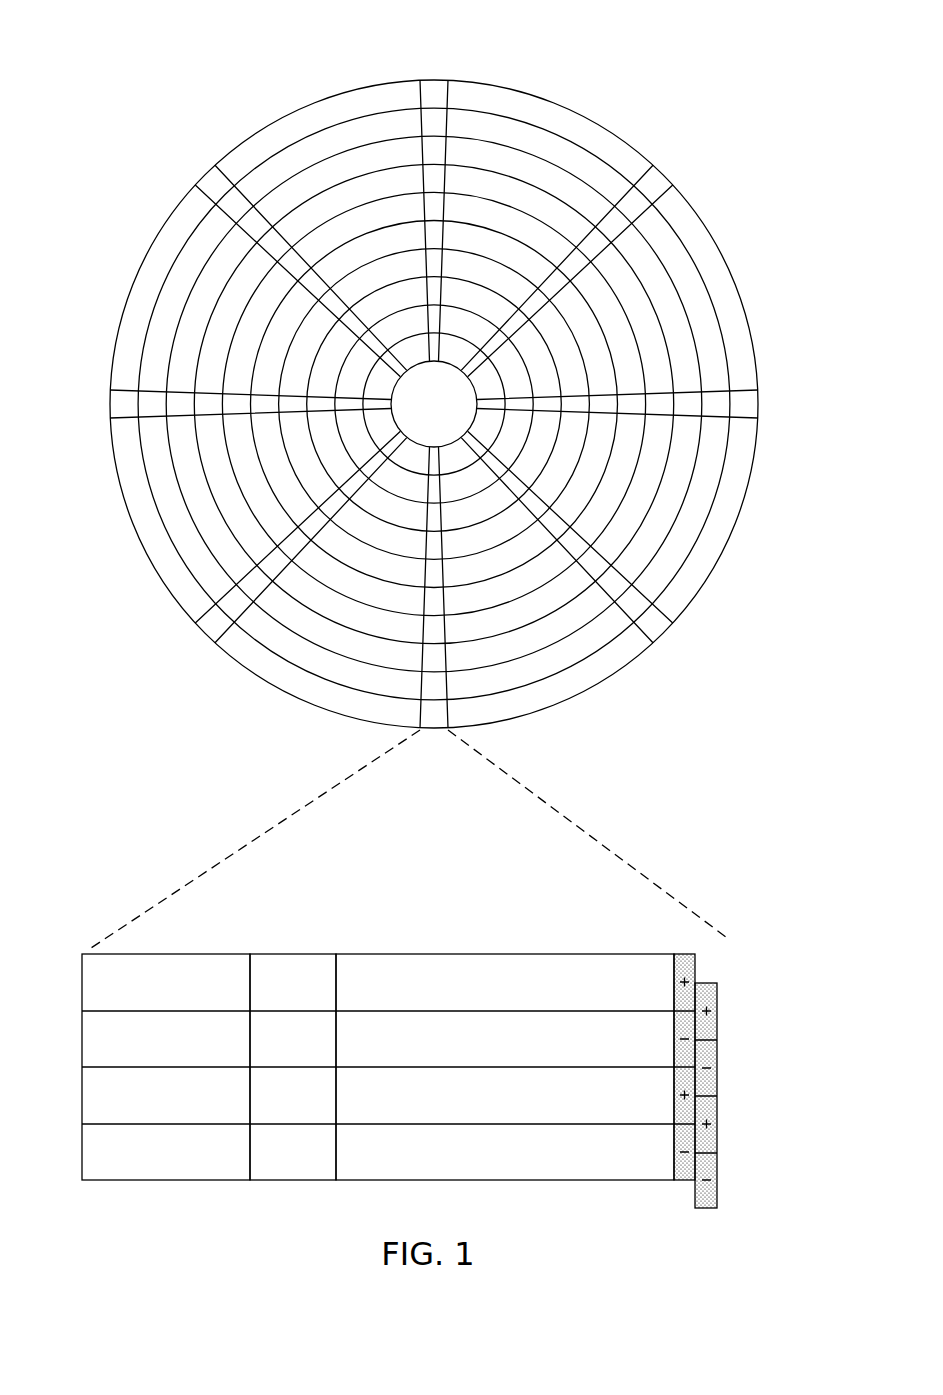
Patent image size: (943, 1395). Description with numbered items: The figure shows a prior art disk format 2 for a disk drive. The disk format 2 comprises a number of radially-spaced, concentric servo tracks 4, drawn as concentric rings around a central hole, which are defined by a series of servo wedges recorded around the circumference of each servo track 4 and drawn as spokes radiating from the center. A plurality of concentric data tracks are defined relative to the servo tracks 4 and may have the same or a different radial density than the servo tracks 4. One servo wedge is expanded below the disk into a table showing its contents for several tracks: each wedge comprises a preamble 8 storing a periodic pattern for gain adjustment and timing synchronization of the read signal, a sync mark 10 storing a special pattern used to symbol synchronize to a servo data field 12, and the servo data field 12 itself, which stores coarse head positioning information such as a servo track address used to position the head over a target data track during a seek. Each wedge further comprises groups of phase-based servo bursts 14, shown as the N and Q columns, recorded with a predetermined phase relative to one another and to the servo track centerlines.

The disk format 2 is at (197, 85).
The servo tracks 4 is at (548, 145).
The preamble 8 is at (175, 954).
The sync mark 10 is at (298, 954).
The servo data field 12 is at (493, 954).
The servo bursts 14 is at (713, 952).